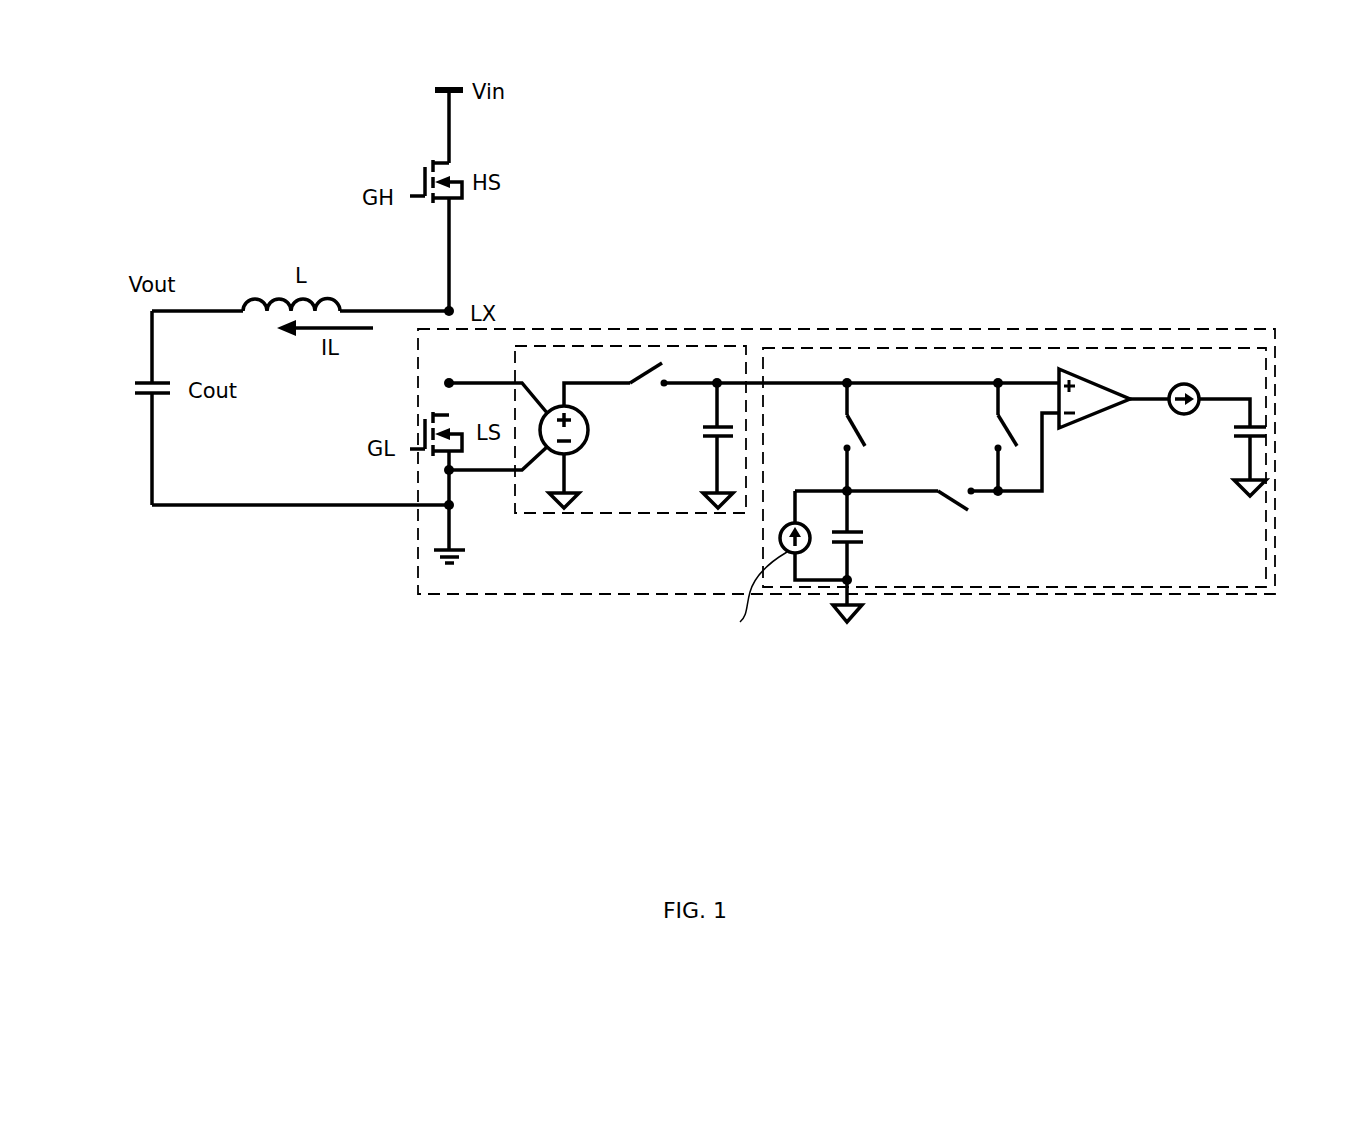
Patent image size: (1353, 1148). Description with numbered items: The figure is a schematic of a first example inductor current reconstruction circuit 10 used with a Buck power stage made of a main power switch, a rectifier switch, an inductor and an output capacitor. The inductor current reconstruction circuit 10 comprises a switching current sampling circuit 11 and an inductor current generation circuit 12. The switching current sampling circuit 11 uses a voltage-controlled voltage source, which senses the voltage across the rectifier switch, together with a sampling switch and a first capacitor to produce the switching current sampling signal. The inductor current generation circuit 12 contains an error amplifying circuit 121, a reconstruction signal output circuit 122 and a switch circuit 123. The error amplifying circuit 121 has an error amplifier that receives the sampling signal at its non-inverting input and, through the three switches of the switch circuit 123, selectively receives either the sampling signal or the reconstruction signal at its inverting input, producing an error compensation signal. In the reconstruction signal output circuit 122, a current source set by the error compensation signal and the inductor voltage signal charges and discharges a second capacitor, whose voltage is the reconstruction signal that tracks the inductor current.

The inductor current reconstruction circuit 10 is at (832, 329).
The switching current sampling circuit 11 is at (564, 513).
The inductor current generation circuit 12 is at (944, 471).
The error amplifying circuit 121 is at (1095, 426).
The reconstruction signal output circuit 122 is at (866, 556).
The switch circuit 123 is at (892, 446).